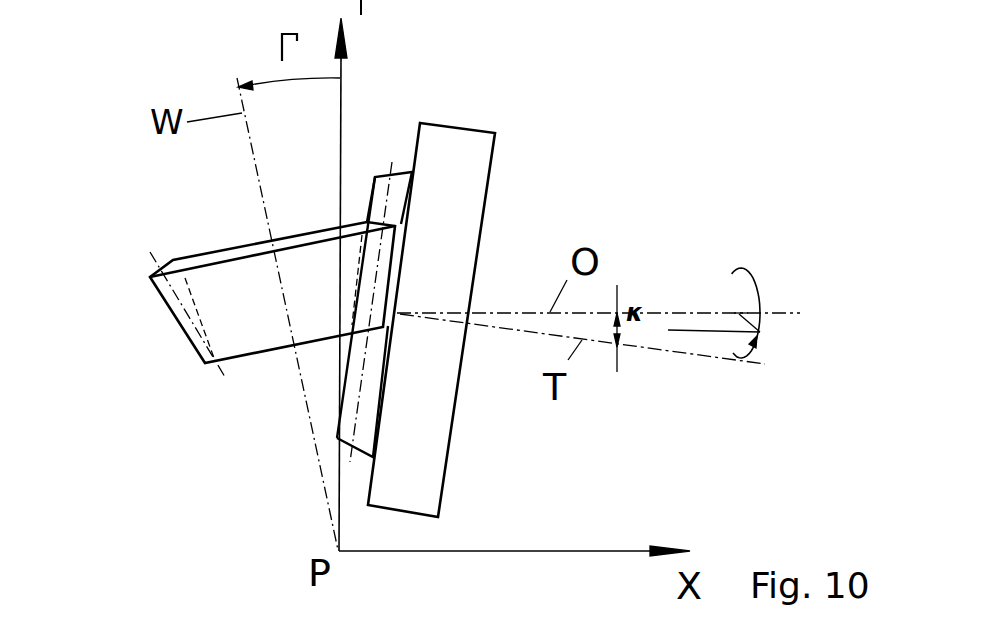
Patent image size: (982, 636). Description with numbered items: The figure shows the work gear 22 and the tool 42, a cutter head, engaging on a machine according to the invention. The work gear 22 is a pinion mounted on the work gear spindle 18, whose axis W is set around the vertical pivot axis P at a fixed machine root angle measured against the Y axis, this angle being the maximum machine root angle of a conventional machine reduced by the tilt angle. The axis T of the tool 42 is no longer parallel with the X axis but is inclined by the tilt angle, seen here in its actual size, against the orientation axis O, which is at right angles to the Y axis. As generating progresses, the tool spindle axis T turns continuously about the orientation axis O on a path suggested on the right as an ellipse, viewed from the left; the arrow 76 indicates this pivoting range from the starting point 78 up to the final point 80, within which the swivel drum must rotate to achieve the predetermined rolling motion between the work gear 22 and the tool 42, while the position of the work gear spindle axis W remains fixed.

The work gear spindle 18 is at (224, 196).
The work gear 22 is at (250, 340).
The tool 42 is at (467, 182).
The arrow 76 is at (742, 356).
The point 78 is at (728, 343).
The point 80 is at (760, 332).